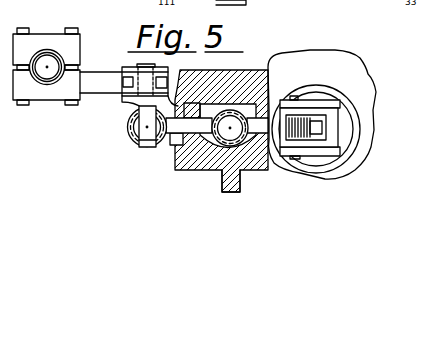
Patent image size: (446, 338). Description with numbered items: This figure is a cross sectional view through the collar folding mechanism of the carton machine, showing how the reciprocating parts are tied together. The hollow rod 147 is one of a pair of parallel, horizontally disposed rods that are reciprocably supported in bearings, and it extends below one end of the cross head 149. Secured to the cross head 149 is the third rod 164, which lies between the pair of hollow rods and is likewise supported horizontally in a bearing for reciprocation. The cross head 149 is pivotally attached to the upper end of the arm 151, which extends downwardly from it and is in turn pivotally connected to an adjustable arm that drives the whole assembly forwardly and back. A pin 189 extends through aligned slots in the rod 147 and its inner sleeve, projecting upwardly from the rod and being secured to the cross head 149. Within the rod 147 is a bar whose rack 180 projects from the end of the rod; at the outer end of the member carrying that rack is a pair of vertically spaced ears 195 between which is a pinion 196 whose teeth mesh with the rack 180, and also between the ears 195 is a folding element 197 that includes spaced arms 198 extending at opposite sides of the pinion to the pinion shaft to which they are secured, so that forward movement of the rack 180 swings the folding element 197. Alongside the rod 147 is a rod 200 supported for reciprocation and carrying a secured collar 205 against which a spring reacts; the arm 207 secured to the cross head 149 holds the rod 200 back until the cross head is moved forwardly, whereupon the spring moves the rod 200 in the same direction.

The collar 205 is at (35, 42).
The rod 200 is at (48, 84).
The arm 207 is at (110, 88).
The pin 189 is at (130, 128).
The hollow rod 147 is at (140, 144).
The cross head 149 is at (210, 76).
The third rod 164 is at (236, 146).
The arm 151 is at (220, 189).
The spaced arms 198 is at (307, 112).
The folding element 197 is at (372, 93).
The ears 195 is at (326, 100).
The pinion 196 is at (289, 116).
The rack 180 is at (313, 129).